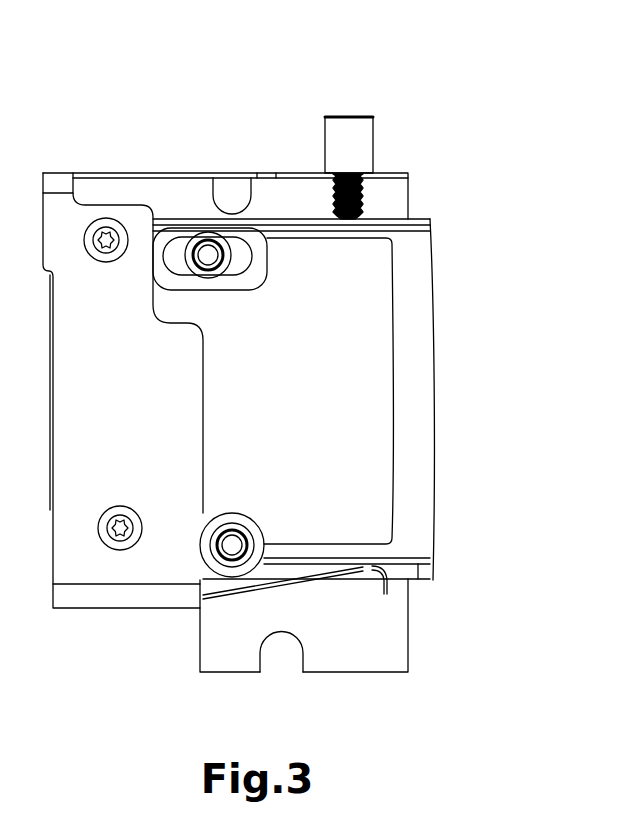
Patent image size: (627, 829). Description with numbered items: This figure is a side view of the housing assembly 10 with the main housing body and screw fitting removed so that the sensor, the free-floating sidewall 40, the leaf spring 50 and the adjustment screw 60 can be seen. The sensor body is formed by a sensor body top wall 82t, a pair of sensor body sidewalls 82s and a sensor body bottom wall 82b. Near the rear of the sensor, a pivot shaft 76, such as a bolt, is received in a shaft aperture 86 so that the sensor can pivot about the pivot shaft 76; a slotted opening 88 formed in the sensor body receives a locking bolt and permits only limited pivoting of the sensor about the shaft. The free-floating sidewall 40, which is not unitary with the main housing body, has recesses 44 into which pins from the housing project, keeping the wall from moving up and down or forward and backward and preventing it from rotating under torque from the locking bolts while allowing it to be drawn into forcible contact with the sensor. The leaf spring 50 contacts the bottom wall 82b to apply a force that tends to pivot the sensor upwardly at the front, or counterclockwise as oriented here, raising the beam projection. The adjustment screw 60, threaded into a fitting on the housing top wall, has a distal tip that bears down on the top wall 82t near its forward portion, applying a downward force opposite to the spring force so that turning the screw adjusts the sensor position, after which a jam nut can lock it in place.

The housing assembly 10 is at (333, 55).
The free-floating sidewall 40 is at (358, 647).
The recesses 44 is at (251, 191).
The leaf spring 50 is at (340, 580).
The adjustment screw 60 is at (355, 152).
The pivot shaft 76 is at (225, 441).
The sensor body top wall 82t is at (393, 217).
The sensor body sidewalls 82s is at (408, 382).
The sensor body bottom wall 82b is at (423, 580).
The shaft aperture 86 is at (207, 549).
The slotted opening 88 is at (183, 246).